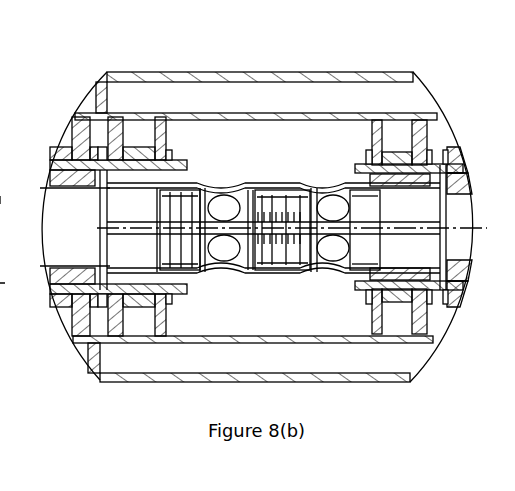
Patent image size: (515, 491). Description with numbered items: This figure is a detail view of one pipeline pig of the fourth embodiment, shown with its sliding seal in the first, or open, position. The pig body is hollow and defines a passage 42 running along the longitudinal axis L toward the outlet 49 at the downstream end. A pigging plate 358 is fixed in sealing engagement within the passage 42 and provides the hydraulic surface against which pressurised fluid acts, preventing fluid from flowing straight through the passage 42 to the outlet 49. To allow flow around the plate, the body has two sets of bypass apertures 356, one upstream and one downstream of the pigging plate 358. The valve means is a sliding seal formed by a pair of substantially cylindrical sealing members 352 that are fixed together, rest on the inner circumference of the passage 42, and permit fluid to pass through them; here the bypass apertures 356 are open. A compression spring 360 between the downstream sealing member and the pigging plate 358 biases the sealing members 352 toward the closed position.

The passage 42 is at (82, 218).
The outlet 49 is at (447, 170).
The sealing members 352 is at (268, 200).
The bypass apertures 356 is at (230, 192).
The pigging plate 358 is at (250, 258).
The compression spring 360 is at (275, 248).
The longitudinal axis L is at (455, 223).